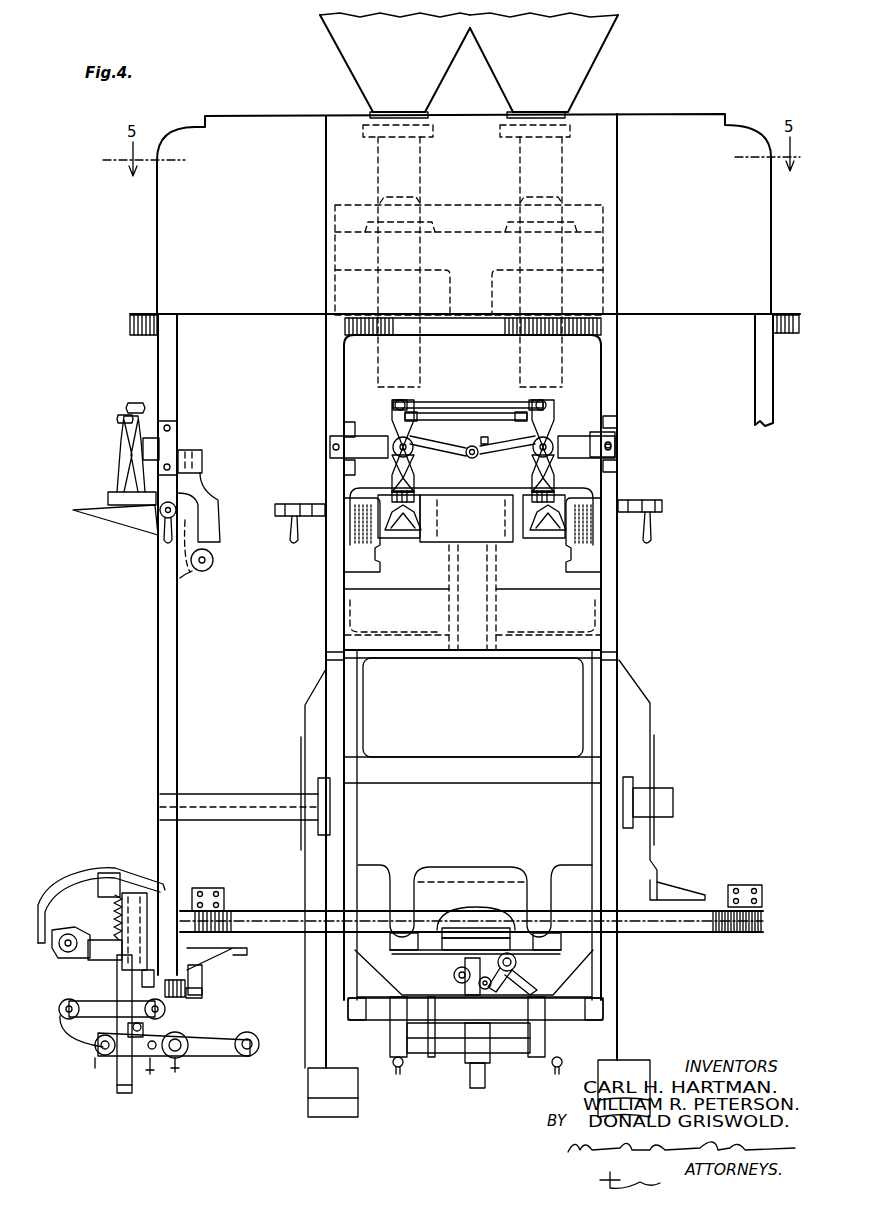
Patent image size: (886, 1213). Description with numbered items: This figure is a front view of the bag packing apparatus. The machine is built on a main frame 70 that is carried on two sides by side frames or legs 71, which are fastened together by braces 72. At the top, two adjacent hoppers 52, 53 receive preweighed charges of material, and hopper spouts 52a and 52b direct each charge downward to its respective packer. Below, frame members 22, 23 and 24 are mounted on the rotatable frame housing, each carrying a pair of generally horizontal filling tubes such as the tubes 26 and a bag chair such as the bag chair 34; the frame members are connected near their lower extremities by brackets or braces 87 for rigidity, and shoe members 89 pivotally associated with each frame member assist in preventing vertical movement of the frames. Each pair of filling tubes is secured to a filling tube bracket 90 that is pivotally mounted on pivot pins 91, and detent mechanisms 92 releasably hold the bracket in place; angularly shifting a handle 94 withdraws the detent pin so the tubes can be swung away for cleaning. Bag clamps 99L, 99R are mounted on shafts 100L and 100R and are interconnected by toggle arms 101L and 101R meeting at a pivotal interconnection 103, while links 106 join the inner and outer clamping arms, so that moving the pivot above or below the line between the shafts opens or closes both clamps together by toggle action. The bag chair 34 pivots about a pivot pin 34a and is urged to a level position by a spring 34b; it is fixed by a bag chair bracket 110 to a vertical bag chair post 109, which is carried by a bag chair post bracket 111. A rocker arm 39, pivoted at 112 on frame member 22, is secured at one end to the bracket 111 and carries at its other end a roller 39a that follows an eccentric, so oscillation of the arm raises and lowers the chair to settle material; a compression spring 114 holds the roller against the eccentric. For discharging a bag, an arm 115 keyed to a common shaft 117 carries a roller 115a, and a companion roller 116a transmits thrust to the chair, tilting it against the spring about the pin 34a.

The frame member 22 is at (178, 385).
The frame member 23 is at (323, 370).
The frame member 24 is at (755, 372).
The filling tubes 26 is at (120, 520).
The bag chair 34 is at (478, 866).
The pivot pin 34a is at (450, 957).
The spring 34b is at (108, 910).
The rocker arm 39 is at (423, 1057).
The roller 39a is at (250, 1056).
The hopper 52 is at (395, 200).
The hopper spout 52a is at (395, 290).
The hopper spout 52b is at (548, 306).
The hopper 53 is at (544, 200).
The main frame 70 is at (593, 612).
The side frames or legs 71 is at (305, 700).
The braces 72 is at (468, 765).
The brackets or braces 87 is at (243, 821).
The shoe members 89 is at (268, 940).
The filling tube bracket 90 is at (472, 540).
The pivot pins 91 is at (368, 560).
The detent mechanisms 92 is at (468, 494).
The handle 94 is at (290, 535).
The bag clamp 99L is at (392, 470).
The bag clamp 99R is at (553, 470).
The shaft 100L is at (396, 436).
The shaft 100R is at (549, 436).
The toggle arm 101L is at (460, 446).
The toggle arm 101R is at (497, 448).
The pivotal interconnection 103 is at (472, 458).
The links 106 is at (455, 408).
The bag chair post 109 is at (476, 1090).
The bag chair bracket 110 is at (88, 960).
The bag chair post bracket 111 is at (80, 1035).
The pivot 112 is at (178, 1058).
The compression spring 114 is at (116, 1060).
The arm 115 is at (204, 973).
The roller 115a is at (200, 998).
The roller 116a is at (142, 980).
The common shaft 117 is at (517, 962).